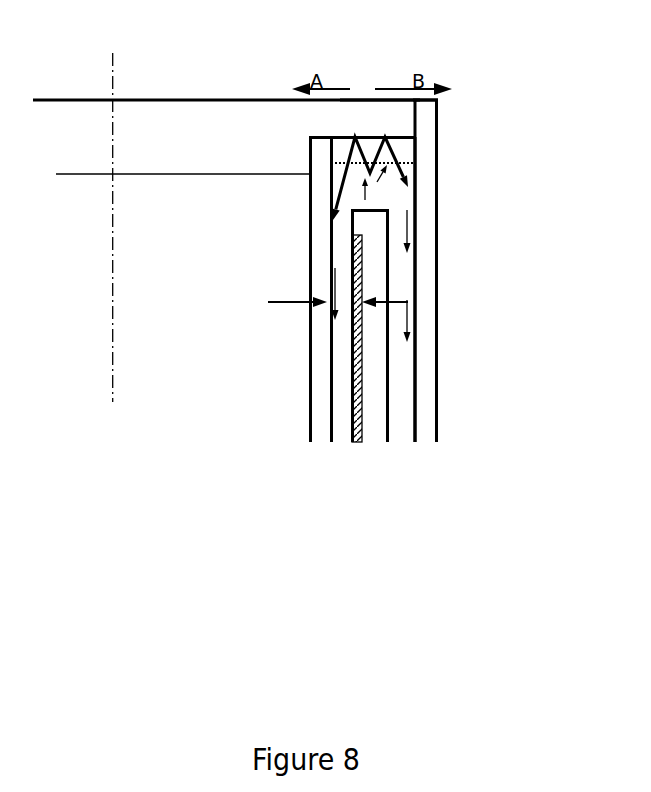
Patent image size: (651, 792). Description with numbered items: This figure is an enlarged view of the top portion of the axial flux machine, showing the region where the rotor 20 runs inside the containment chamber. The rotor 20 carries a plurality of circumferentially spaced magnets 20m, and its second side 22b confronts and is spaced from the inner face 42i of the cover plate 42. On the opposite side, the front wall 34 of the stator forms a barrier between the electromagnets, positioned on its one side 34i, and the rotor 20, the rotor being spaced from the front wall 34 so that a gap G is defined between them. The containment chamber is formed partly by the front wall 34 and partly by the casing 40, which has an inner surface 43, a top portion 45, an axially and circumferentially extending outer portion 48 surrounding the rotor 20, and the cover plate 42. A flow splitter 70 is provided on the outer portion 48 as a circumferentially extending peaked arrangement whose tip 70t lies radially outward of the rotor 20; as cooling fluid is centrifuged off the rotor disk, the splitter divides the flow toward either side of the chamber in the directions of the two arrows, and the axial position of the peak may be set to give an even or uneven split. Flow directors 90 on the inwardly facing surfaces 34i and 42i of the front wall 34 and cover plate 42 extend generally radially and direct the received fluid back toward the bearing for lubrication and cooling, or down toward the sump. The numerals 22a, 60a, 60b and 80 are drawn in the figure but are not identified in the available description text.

The rotor 20 is at (380, 277).
The magnets 20m is at (363, 438).
The first leg 22a is at (349, 412).
The second side of the rotor 22b is at (388, 443).
The front wall 34 is at (310, 273).
The one side of the front wall 34i is at (332, 238).
The casing 40 is at (380, 113).
The cover plate 42 is at (427, 208).
The inner face of the cover plate 42i is at (413, 348).
The inner surface of the casing 43 is at (368, 147).
The top portion of the casing 45 is at (402, 203).
The outer portion of the casing 48 is at (348, 120).
The first channel 60a is at (348, 138).
The second channel 60b is at (414, 161).
The flow splitter 70 is at (410, 189).
The tip of the flow splitter 70t is at (381, 197).
The gap 80 is at (330, 181).
The flow directors 90 is at (332, 385).
The gap G is at (283, 300).